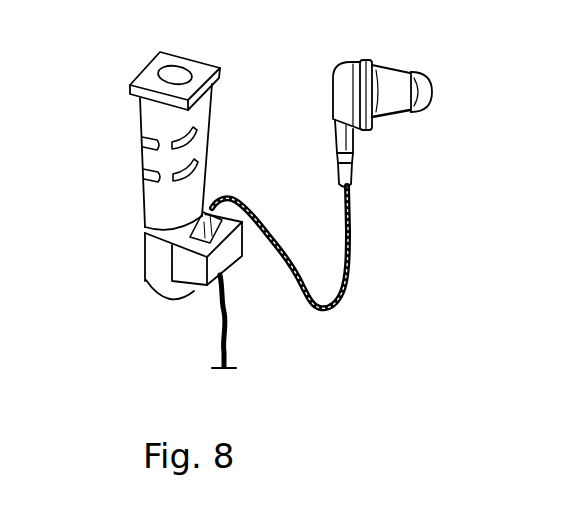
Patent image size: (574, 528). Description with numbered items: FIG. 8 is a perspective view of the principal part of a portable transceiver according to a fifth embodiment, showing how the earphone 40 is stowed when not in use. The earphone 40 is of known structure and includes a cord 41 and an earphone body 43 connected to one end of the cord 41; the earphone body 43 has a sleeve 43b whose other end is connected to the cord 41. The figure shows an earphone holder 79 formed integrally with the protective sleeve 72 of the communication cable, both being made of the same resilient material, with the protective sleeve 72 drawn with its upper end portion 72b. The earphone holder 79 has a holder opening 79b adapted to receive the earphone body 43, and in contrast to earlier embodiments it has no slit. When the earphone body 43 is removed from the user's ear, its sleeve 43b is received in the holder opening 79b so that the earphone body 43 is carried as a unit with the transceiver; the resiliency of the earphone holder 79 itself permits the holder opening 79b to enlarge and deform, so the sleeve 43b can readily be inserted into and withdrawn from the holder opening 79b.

The earphone 40 is at (362, 230).
The cord 41 is at (338, 301).
The earphone body 43 is at (372, 62).
The sleeve 43b is at (350, 142).
The protective sleeve 72 is at (142, 155).
The cap 72b is at (200, 67).
The earphone holder 79 is at (190, 280).
The holder opening 79b is at (209, 208).